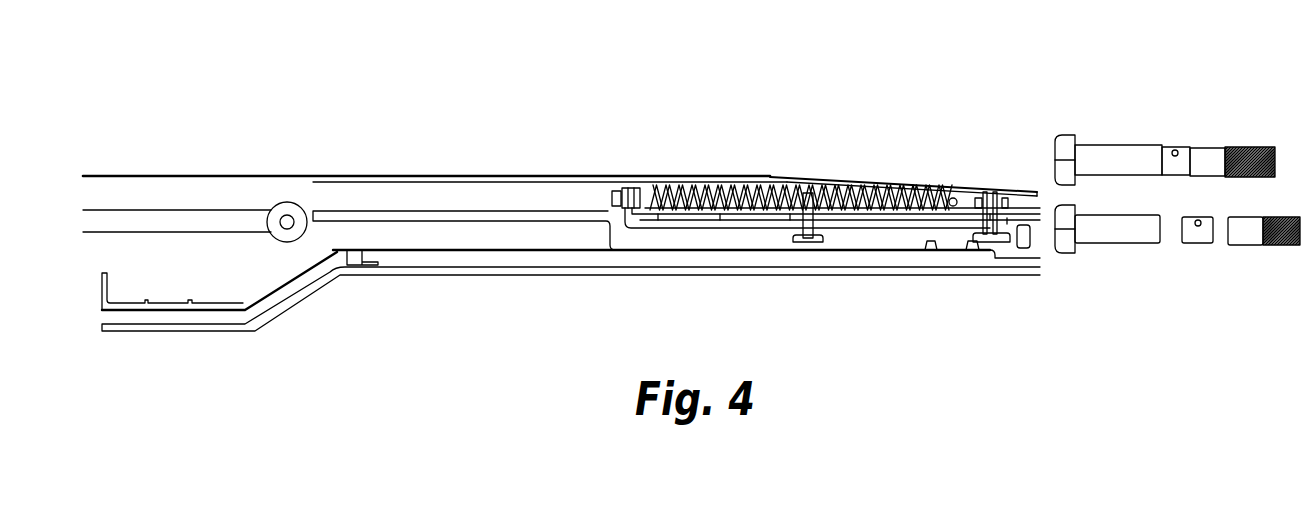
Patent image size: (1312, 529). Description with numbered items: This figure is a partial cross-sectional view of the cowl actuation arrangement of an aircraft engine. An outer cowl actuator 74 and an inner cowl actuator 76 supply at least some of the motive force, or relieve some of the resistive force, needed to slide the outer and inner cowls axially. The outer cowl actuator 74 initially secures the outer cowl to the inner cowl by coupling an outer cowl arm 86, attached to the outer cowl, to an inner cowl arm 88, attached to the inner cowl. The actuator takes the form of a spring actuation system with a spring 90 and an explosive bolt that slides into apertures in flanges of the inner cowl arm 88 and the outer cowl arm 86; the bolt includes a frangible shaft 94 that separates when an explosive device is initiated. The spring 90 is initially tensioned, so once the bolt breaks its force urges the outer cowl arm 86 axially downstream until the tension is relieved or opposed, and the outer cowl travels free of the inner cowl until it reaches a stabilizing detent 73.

The stabilizing detent 73 is at (803, 198).
The outer cowl actuator 74 is at (695, 146).
The inner cowl actuator 76 is at (152, 210).
The outer cowl arm 86 is at (683, 218).
The inner cowl arm 88 is at (430, 211).
The spring 90 is at (738, 184).
The frangible shaft 94 is at (1225, 147).